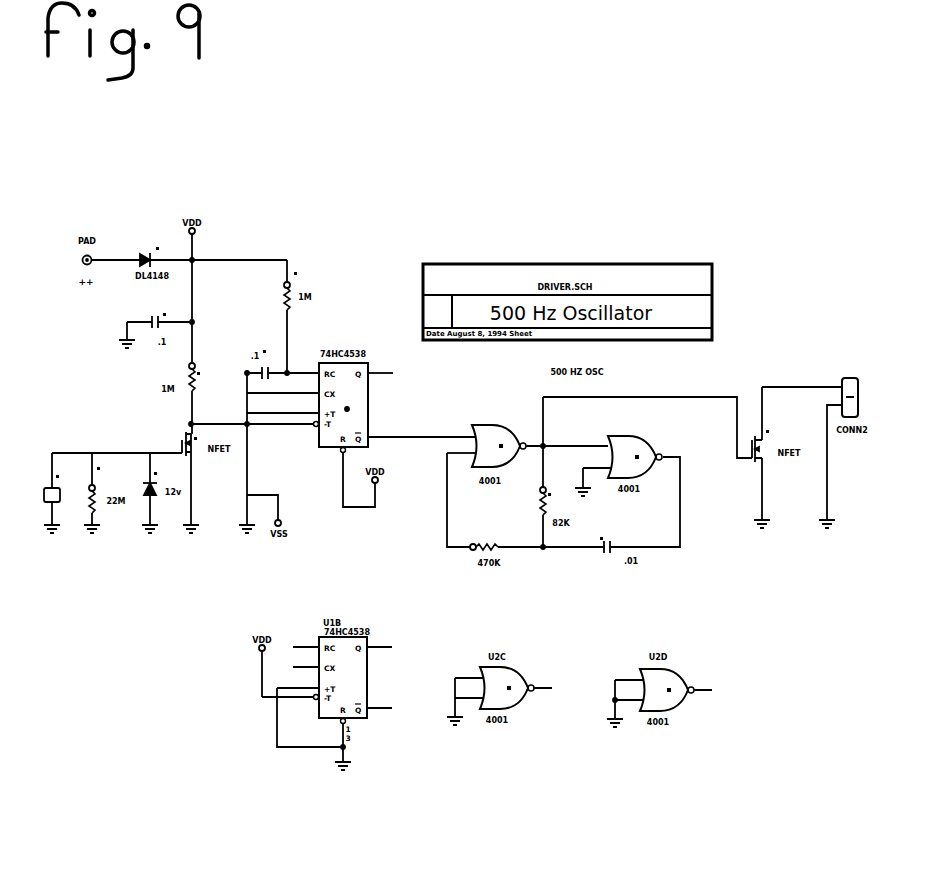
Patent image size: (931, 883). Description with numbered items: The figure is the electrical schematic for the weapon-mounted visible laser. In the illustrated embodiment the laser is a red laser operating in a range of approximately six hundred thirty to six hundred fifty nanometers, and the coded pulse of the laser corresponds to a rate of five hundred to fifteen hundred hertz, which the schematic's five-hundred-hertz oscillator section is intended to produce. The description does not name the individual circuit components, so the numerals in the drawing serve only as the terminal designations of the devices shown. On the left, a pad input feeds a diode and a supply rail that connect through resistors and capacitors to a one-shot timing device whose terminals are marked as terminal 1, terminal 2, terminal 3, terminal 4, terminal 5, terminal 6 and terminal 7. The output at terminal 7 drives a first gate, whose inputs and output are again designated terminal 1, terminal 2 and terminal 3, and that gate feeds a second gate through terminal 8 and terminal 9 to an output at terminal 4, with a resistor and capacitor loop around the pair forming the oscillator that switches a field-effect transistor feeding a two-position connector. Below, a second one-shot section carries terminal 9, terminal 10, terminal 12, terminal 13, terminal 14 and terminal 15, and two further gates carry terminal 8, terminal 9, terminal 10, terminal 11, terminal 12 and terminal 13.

The pin 1 is at (574, 416).
The pin 2 is at (574, 400).
The pin 3 is at (442, 453).
The pin 4 is at (490, 430).
The pin 5 is at (310, 418).
The pin 6 is at (382, 368).
The pin 7 is at (382, 432).
The pin 8 is at (534, 557).
The pin 9 is at (490, 583).
The pin 10 is at (459, 662).
The pin 11 is at (700, 684).
The pin 12 is at (467, 679).
The pin 13 is at (467, 694).
The pin 14 is at (306, 642).
The pin 15 is at (306, 662).